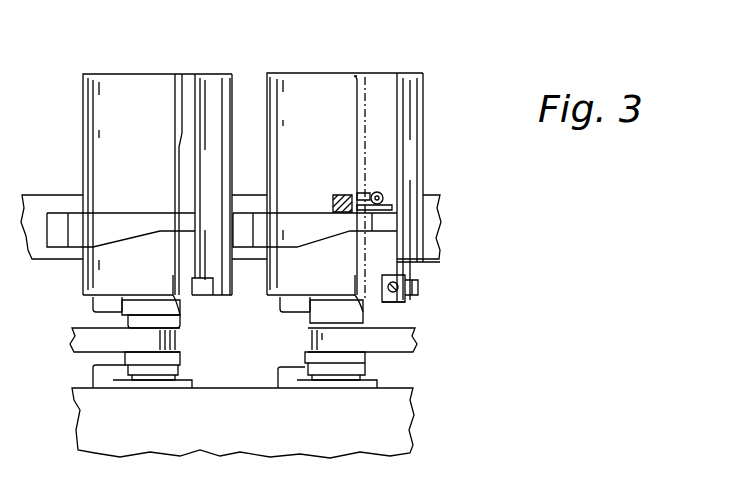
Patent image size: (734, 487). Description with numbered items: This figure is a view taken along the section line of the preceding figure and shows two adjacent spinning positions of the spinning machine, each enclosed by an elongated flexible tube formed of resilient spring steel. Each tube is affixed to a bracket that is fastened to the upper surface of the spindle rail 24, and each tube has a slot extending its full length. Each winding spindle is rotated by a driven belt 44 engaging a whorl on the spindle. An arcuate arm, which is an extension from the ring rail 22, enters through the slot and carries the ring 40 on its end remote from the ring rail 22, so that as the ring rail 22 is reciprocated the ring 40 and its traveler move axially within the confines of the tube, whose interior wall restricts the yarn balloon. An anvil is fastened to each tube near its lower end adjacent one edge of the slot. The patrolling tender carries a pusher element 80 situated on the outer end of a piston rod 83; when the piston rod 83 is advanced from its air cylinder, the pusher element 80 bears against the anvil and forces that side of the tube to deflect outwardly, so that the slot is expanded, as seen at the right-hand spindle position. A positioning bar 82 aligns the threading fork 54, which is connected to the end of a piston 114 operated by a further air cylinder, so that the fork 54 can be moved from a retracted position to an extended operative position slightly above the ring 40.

The ring rail 22 is at (42, 198).
The spindle rail 24 is at (216, 432).
The ring 40 is at (395, 211).
The driven belt 44 is at (420, 347).
The threading fork 54 is at (366, 194).
The pusher element 80 is at (410, 293).
The positioning bar 82 is at (334, 198).
The piston rod 83 is at (392, 293).
The piston 114 is at (384, 197).